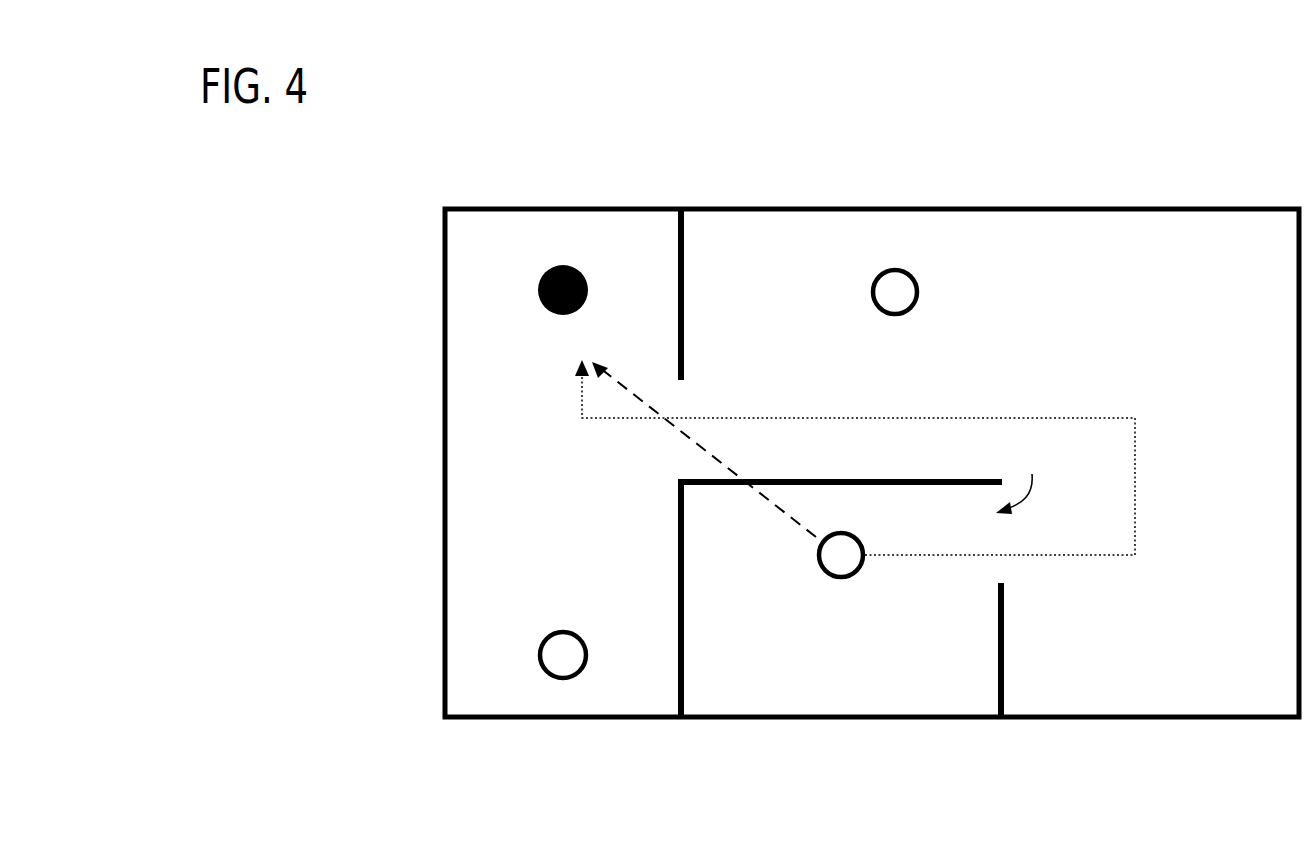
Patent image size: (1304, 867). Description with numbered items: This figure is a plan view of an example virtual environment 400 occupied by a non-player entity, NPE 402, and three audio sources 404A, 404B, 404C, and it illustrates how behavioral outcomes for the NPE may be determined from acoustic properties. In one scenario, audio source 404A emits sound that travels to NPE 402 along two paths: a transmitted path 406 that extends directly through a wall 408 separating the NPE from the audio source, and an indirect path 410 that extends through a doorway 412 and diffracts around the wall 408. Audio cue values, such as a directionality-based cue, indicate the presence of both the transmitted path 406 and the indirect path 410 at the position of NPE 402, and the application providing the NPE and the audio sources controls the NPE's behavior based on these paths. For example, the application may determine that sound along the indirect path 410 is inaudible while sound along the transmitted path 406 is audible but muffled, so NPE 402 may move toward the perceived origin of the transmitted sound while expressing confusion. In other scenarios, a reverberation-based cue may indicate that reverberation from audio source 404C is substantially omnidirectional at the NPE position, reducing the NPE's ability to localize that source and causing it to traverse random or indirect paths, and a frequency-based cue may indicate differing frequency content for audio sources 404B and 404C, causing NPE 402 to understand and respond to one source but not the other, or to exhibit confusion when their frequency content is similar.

The virtual environment 400 is at (863, 781).
The NPE 402 is at (563, 316).
The audio source 404A is at (843, 578).
The audio source 404B is at (562, 630).
The audio source 404C is at (893, 316).
The transmitted path 406 is at (676, 427).
The wall 408 is at (845, 479).
The indirect path 410 is at (1137, 535).
The doorway 412 is at (1022, 481).